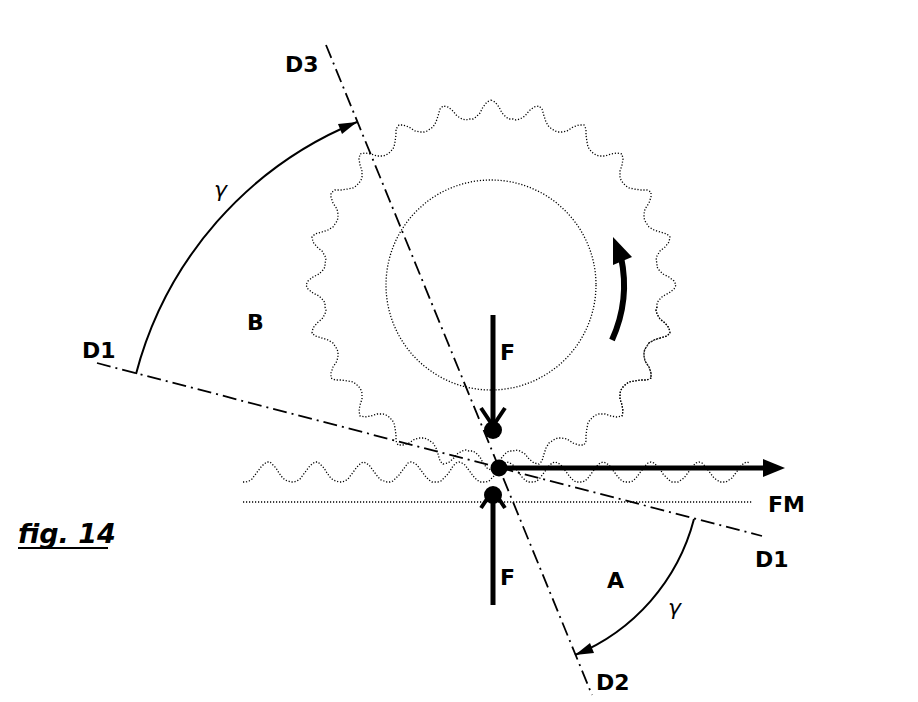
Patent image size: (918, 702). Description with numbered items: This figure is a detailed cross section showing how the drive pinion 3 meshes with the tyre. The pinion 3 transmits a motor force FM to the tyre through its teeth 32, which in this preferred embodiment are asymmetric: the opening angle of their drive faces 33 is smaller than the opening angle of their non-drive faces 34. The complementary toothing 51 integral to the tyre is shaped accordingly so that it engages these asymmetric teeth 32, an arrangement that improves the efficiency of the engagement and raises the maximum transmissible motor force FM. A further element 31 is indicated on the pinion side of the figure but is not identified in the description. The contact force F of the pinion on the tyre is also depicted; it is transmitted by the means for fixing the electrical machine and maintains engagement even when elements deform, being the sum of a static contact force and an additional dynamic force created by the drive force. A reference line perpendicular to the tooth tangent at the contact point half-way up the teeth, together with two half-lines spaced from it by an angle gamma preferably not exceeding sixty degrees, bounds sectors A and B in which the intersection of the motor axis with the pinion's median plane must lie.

The drive pinion 3 is at (551, 284).
The teeth of the toothed wheel 31 is at (722, 241).
The teeth 32 is at (652, 382).
The drive faces 33 is at (627, 411).
The non-drive faces 34 is at (662, 352).
The complementary toothing 51 is at (379, 516).